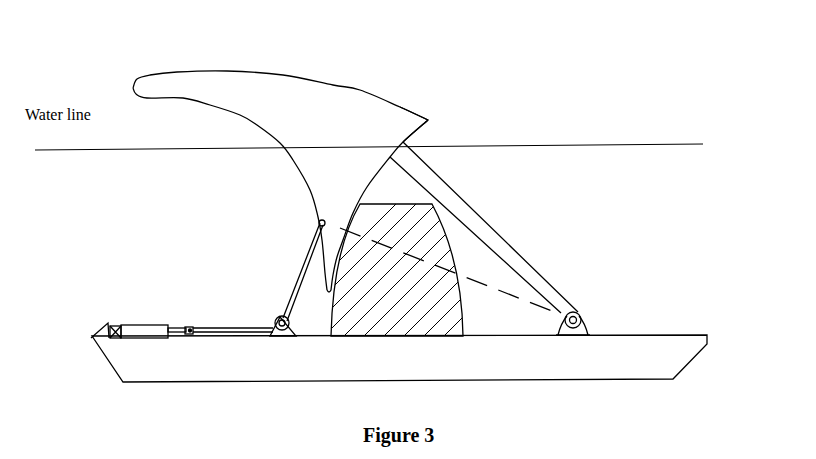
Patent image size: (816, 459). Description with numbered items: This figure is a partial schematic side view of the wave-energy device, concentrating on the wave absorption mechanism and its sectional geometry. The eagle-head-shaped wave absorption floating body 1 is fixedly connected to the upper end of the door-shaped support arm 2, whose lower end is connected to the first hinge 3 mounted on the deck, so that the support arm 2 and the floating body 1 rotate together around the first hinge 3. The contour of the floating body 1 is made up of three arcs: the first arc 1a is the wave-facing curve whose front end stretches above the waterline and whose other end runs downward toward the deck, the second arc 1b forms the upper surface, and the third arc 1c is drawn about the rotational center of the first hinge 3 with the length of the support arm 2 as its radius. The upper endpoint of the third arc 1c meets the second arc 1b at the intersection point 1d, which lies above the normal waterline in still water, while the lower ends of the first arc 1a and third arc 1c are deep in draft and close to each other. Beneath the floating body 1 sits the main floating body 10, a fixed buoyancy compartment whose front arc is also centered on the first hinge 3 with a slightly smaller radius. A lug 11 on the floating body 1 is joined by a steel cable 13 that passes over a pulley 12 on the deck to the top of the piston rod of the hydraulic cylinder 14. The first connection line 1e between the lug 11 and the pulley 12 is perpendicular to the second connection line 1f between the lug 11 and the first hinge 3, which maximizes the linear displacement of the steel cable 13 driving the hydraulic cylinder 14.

The eagle-head-shaped wave absorption floating body 1 is at (345, 213).
The first arc 1a is at (257, 127).
The second arc 1b is at (360, 90).
The third arc 1c is at (367, 187).
The intersection point 1d is at (427, 118).
The first connection line 1e is at (297, 297).
The second connection line 1f is at (498, 293).
The door-shaped support arm 2 is at (490, 229).
The first hinge 3 is at (580, 318).
The main floating body 10 is at (343, 323).
The lug 11 is at (320, 224).
The pulley 12 is at (280, 318).
The steel cable 13 is at (232, 328).
The hydraulic cylinder 14 is at (168, 328).